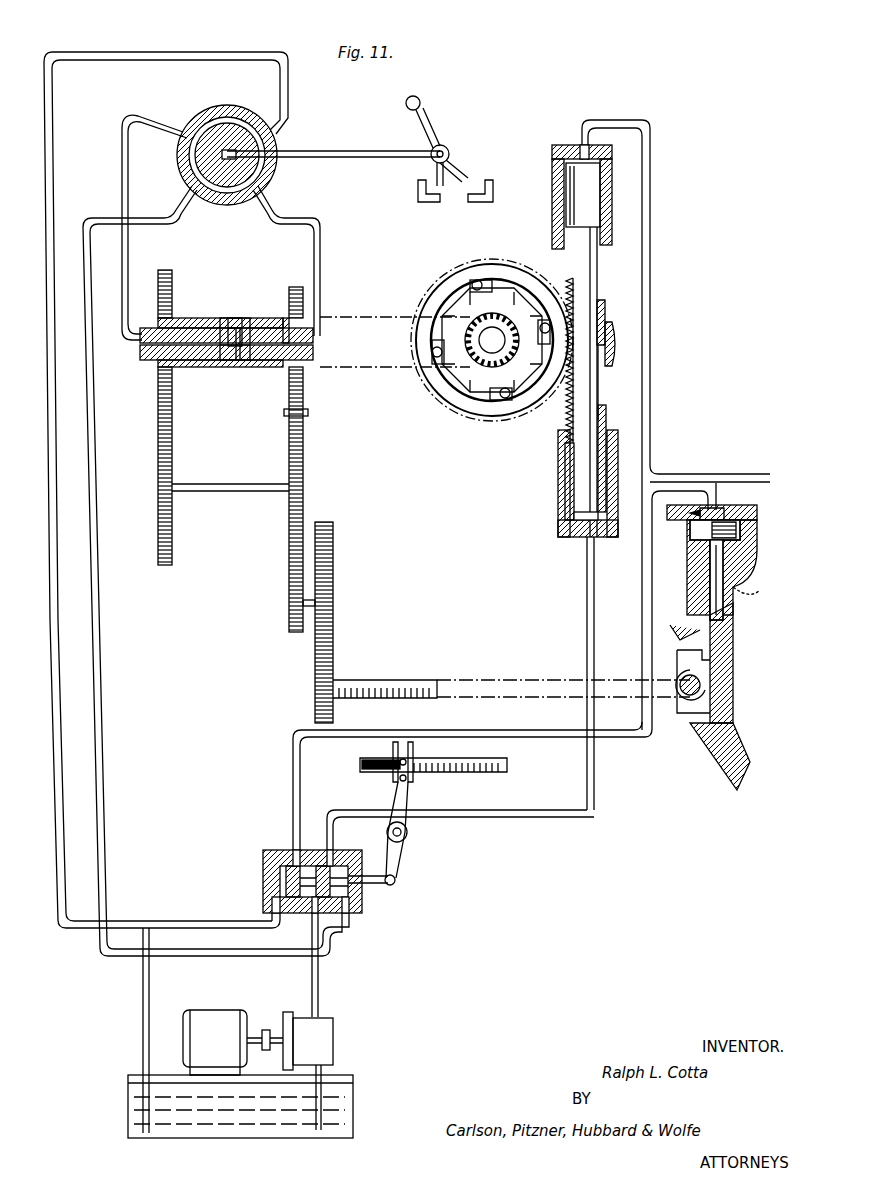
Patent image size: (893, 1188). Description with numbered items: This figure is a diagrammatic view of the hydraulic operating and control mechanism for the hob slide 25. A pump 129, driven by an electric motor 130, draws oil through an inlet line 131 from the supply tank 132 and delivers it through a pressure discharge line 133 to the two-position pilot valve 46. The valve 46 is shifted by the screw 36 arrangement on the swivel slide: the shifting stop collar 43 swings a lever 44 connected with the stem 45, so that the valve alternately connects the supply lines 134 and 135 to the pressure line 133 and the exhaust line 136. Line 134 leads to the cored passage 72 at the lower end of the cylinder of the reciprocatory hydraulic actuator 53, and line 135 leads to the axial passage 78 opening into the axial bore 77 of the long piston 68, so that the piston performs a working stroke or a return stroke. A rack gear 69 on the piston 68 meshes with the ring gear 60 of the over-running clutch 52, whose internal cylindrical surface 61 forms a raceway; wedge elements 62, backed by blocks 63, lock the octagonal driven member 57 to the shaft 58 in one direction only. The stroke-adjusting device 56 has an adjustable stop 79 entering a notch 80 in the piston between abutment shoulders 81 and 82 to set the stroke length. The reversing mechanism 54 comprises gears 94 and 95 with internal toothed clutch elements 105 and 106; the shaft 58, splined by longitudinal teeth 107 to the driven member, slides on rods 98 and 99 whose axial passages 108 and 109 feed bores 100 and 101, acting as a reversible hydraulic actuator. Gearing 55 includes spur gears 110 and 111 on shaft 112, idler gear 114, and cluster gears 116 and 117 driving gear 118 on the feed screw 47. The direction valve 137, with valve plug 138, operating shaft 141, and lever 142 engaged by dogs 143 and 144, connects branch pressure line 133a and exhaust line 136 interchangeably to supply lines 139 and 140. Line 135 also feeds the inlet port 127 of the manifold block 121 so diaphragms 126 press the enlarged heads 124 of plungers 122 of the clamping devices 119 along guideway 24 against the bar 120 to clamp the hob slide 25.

The exhaust line 136 is at (110, 60).
The direction valve 137 is at (192, 118).
The valve plug 138 is at (228, 178).
The supply line 139 is at (322, 224).
The supply line 140 is at (122, 186).
The operating shaft 141 is at (338, 151).
The lever 142 is at (432, 114).
The dog 143 is at (426, 202).
The dog 144 is at (478, 202).
The axial passage 78 is at (578, 140).
The axial bore 77 is at (598, 196).
The reciprocatory hydraulic actuator 53 is at (556, 268).
The rack gear 69 is at (566, 428).
The piston 68 is at (598, 262).
The abutment shoulder 82 is at (604, 306).
The stroke-adjusting device 56 is at (615, 342).
The adjustable stop 79 is at (613, 350).
The notch 80 is at (600, 386).
The abutment shoulder 81 is at (606, 404).
The cored passage 72 is at (584, 540).
The ring gear 60 is at (430, 382).
The over-running clutch 52 is at (446, 402).
The internal cylindrical surface 61 is at (455, 290).
The driven member 57 is at (520, 372).
The shaft 58 is at (492, 320).
The wedge elements 62 is at (478, 282).
The block 63 is at (490, 400).
The gear 95 is at (166, 270).
The spur gear 110 is at (172, 446).
The gear 94 is at (292, 287).
The spur gear 111 is at (304, 460).
The gear 116 is at (290, 620).
The idler gear 114 is at (306, 408).
The shaft 112 is at (210, 493).
The internal toothed clutch element 106 is at (172, 314).
The rod 99 is at (148, 328).
The rod 98 is at (316, 350).
The axial passage 109 is at (152, 362).
The axial passage 108 is at (272, 364).
The internal toothed clutch element 105 is at (286, 310).
The axial bore 100 is at (240, 318).
The axial bore 101 is at (226, 356).
The longitudinal teeth 107 is at (232, 360).
The reversing mechanism 54 is at (233, 378).
The gearing 55 is at (285, 548).
The gear 117 is at (334, 556).
The gear 118 is at (315, 668).
The feed screw 47 is at (378, 680).
The supply line 135 is at (538, 730).
The screw 36 is at (506, 762).
The shifting stop collar 43 is at (394, 778).
The lever 44 is at (402, 858).
The stem 45 is at (382, 888).
The supply line 134 is at (522, 816).
The pilot valve 46 is at (278, 848).
The pressure discharge line 133 is at (320, 995).
The pressure line 133a is at (96, 624).
The electric motor 130 is at (224, 1012).
The pump 129 is at (336, 1034).
The inlet line 131 is at (355, 1090).
The supply tank 132 is at (346, 1114).
The inlet port 127 is at (714, 500).
The diaphragm 126 is at (730, 505).
The clamping device 119 is at (762, 545).
The manifold block 121 is at (758, 514).
The enlarged head 124 is at (748, 530).
The plunger 122 is at (740, 585).
The guideway 24 is at (728, 614).
The bar 120 is at (726, 640).
The hob slide 25 is at (782, 776).